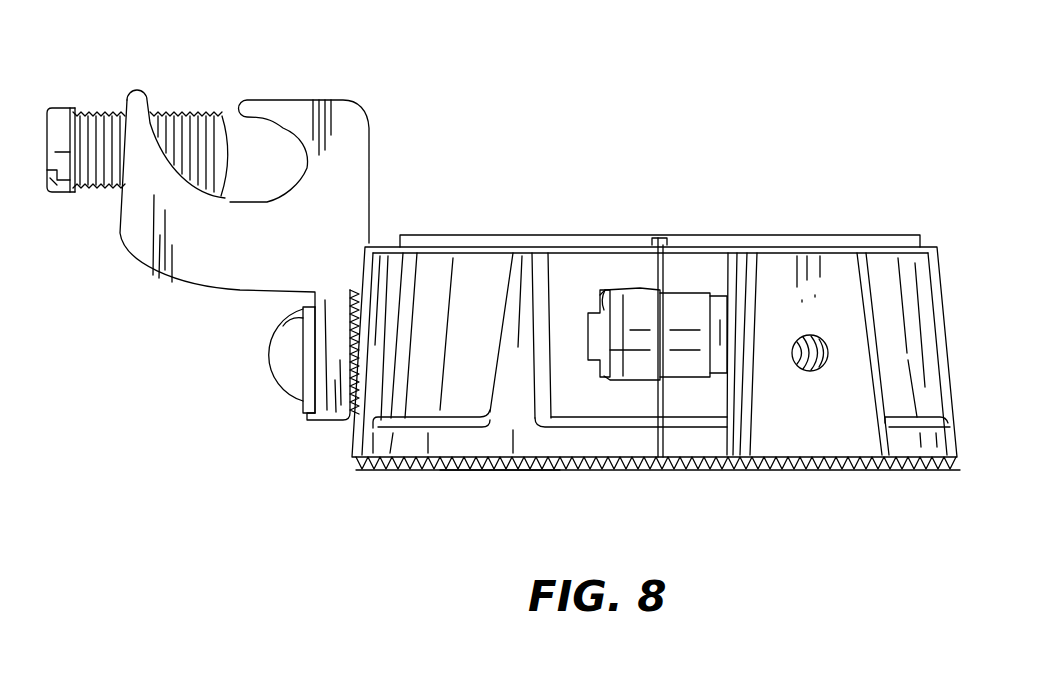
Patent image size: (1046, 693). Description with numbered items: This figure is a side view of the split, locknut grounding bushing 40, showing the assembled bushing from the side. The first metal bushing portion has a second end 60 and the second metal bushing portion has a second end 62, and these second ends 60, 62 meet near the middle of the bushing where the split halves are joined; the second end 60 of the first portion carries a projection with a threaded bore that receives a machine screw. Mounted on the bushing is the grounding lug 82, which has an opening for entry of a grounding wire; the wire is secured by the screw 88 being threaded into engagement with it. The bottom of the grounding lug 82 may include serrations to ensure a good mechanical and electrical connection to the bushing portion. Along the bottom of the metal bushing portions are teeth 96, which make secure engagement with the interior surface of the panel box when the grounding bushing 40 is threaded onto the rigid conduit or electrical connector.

The split, locknut grounding bushing 40 is at (763, 180).
The second end of the first metal bushing portion 60 is at (690, 308).
The second end of the second metal bushing portion 62 is at (640, 318).
The grounding lug 82 is at (337, 98).
The screw 88 is at (92, 110).
The teeth 96 is at (531, 462).